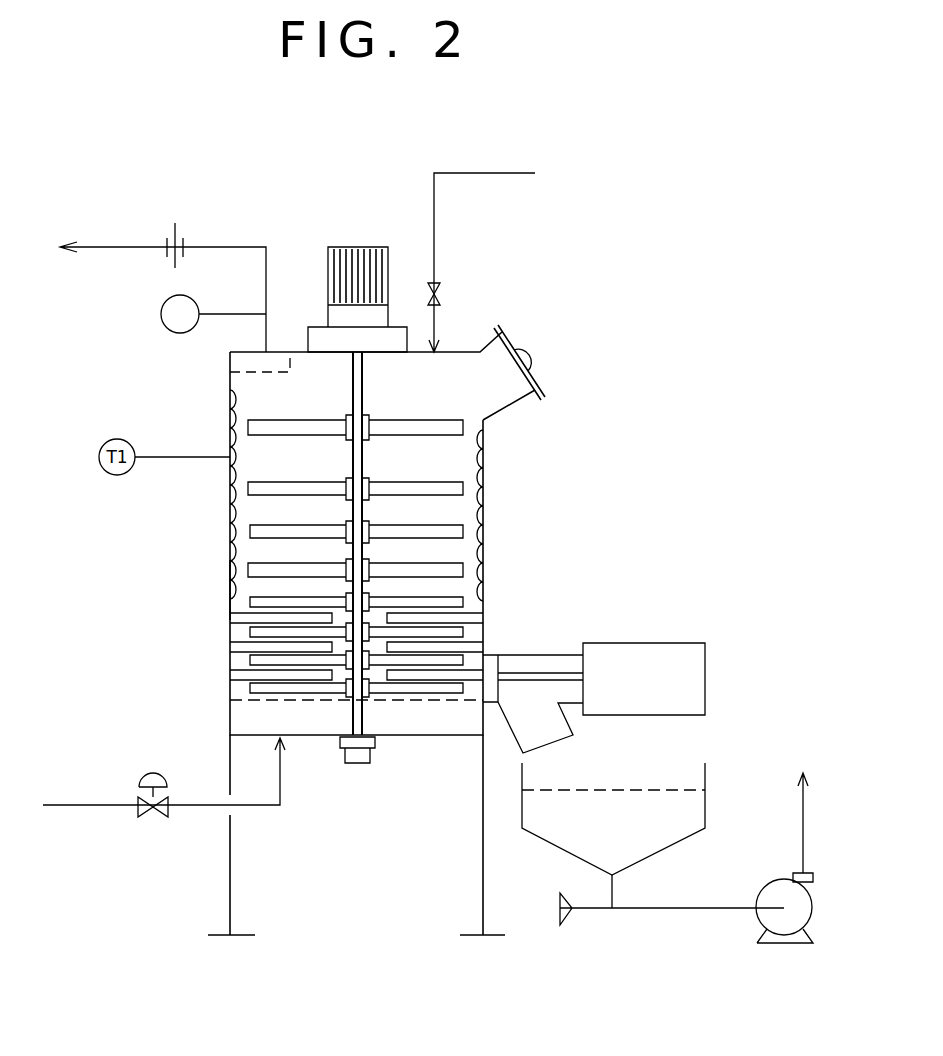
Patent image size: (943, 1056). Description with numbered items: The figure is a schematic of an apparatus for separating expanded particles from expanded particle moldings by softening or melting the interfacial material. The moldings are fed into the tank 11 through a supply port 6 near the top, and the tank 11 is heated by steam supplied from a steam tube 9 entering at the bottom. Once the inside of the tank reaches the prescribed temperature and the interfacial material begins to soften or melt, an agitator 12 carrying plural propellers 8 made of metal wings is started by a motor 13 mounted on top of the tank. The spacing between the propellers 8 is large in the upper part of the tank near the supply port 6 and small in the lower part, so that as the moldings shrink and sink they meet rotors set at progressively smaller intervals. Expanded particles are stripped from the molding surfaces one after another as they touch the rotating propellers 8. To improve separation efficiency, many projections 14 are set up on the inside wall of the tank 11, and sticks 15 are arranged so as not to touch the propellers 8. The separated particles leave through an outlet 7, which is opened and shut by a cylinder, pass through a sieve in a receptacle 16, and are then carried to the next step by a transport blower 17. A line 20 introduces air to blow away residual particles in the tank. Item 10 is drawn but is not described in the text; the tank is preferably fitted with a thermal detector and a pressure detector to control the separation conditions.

The supply port 6 is at (537, 345).
The outlet 7 is at (513, 665).
The propellers 8 is at (447, 487).
The steam tube 9 is at (187, 807).
The exhaust gas line 10 is at (217, 247).
The tank 11 is at (232, 580).
The agitator 12 is at (211, 413).
The motor 13 is at (360, 245).
The projections 14 is at (232, 505).
The sticks 15 is at (238, 648).
The receptacle 16 is at (690, 815).
The transport blower 17 is at (812, 885).
The line 20 is at (500, 256).